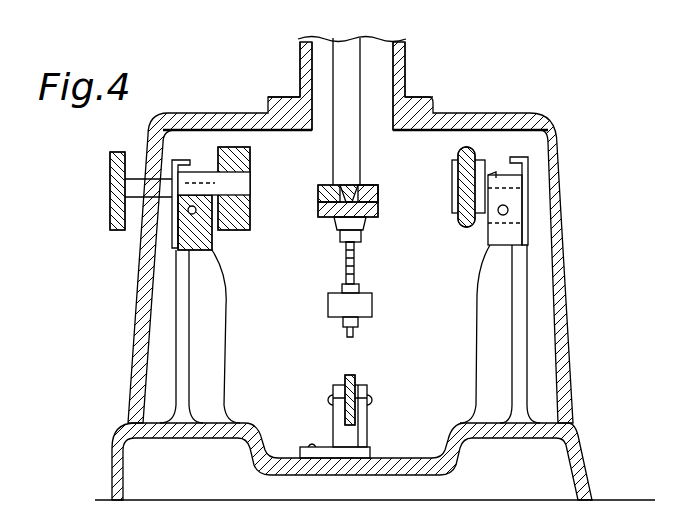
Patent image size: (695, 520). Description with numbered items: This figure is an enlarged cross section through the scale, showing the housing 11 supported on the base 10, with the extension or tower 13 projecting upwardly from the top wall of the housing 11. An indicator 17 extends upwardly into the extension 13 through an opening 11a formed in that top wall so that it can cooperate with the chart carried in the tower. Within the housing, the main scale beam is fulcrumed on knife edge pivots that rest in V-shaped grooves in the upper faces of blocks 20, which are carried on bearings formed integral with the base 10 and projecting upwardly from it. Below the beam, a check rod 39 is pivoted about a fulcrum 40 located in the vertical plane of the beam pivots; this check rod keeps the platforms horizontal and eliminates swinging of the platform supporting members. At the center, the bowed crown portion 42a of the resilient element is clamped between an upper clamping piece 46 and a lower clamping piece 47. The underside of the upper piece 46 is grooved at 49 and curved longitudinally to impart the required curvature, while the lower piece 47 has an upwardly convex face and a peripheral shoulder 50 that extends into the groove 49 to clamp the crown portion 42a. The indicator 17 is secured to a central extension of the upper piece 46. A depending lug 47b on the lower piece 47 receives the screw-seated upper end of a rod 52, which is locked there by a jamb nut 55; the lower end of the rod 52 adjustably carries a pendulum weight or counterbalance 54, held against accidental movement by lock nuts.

The base 10 is at (225, 438).
The housing 11 is at (540, 130).
The opening 11a is at (374, 110).
The extension or tower 13 is at (405, 62).
The indicator 17 is at (347, 57).
The blocks 20 is at (185, 222).
The check rod 39 is at (345, 412).
The fulcrum 40 is at (368, 397).
The apex or crown portion 42a is at (366, 186).
The upper clamping piece 46 is at (318, 190).
The lower clamping piece 47 is at (318, 218).
The depending lug 47b is at (372, 237).
The groove 49 is at (340, 195).
The peripheral shoulder 50 is at (368, 224).
The rod 52 is at (354, 270).
The pendulum weight or counterbalance 54 is at (363, 307).
The jamb nut 55 is at (348, 240).